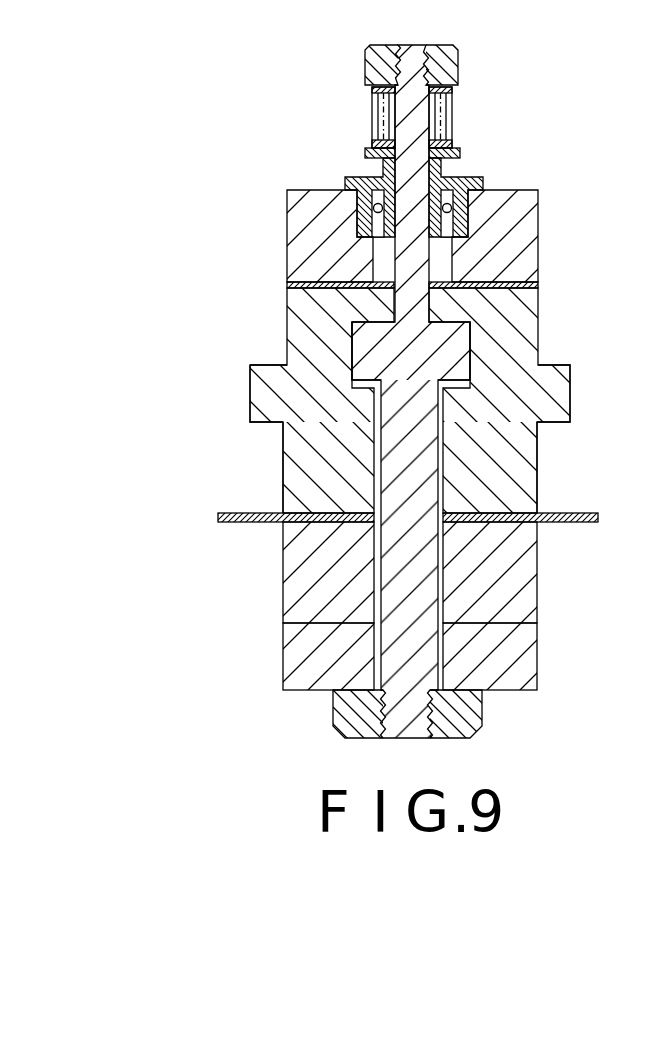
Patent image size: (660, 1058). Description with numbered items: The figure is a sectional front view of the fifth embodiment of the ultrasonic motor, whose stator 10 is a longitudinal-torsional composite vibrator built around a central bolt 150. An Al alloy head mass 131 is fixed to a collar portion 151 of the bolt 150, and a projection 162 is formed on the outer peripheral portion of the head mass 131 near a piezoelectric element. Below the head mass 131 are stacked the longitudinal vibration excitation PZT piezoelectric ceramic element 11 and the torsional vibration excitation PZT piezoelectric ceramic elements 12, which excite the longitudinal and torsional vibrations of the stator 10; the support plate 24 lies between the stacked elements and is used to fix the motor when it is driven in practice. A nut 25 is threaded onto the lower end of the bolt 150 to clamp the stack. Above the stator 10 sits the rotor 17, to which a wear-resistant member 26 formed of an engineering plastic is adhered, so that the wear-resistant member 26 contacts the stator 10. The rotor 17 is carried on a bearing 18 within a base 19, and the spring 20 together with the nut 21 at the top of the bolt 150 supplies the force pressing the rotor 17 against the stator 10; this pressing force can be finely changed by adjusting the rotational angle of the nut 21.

The stator 10 is at (132, 290).
The longitudinal vibration excitation PZT piezoelectric ceramic element 11 is at (302, 477).
The torsional vibration excitation PZT piezoelectric ceramic element 12 is at (308, 595).
The rotor 17 is at (308, 220).
The bearing 18 is at (348, 175).
The base 19 is at (362, 153).
The spring 20 is at (453, 97).
The nut 21 is at (377, 68).
The support plate 24 is at (263, 521).
The nut 25 is at (353, 718).
The wear-resistant member 26 is at (323, 283).
The head mass 131 is at (307, 345).
The bolt 150 is at (410, 662).
The collar portion 151 is at (367, 345).
The projection 162 is at (250, 393).